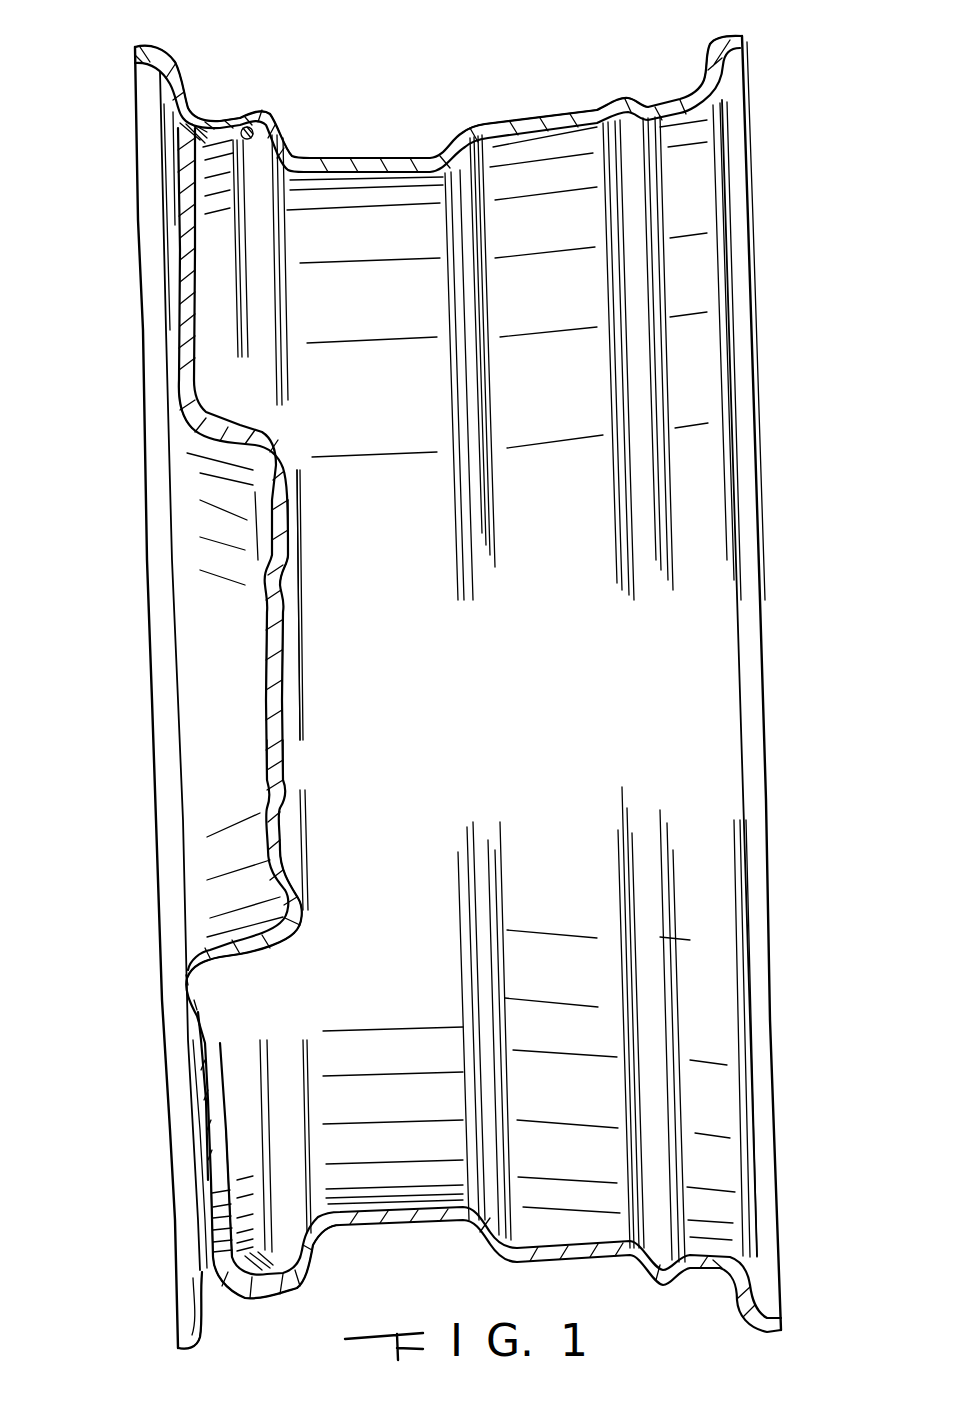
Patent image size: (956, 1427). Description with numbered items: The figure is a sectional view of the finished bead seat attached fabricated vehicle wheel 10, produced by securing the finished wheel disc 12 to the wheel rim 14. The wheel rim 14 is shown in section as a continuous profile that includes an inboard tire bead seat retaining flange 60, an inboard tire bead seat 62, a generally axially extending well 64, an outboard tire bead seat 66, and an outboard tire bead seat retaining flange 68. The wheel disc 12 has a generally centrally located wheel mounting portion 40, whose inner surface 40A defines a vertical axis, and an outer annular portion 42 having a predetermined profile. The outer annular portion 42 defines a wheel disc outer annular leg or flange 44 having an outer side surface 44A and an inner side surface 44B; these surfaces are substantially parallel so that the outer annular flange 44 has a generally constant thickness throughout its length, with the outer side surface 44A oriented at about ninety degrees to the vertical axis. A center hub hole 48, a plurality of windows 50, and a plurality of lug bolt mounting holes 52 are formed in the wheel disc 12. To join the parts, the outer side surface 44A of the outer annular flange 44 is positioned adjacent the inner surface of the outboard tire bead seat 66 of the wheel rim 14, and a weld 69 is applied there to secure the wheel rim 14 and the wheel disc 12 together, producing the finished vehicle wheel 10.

The vehicle wheel 10 is at (100, 428).
The wheel disc 12 is at (294, 612).
The wheel rim 14 is at (497, 124).
The wheel mounting portion 40 is at (265, 616).
The inner surface 40A is at (305, 850).
The outer annular portion 42 is at (202, 1270).
The outer annular flange 44 is at (308, 1292).
The outer side surface 44A is at (272, 1286).
The inner side surface 44B is at (263, 1253).
The center hub hole 48 is at (282, 758).
The windows 50 is at (185, 330).
The lug bolt mounting holes 52 is at (276, 534).
The inboard tire bead seat retaining flange 60 is at (703, 60).
The inboard tire bead seat 62 is at (678, 100).
The well 64 is at (405, 156).
The outboard tire bead seat 66 is at (214, 126).
The outboard tire bead seat retaining flange 68 is at (172, 66).
The weld 69 is at (278, 138).